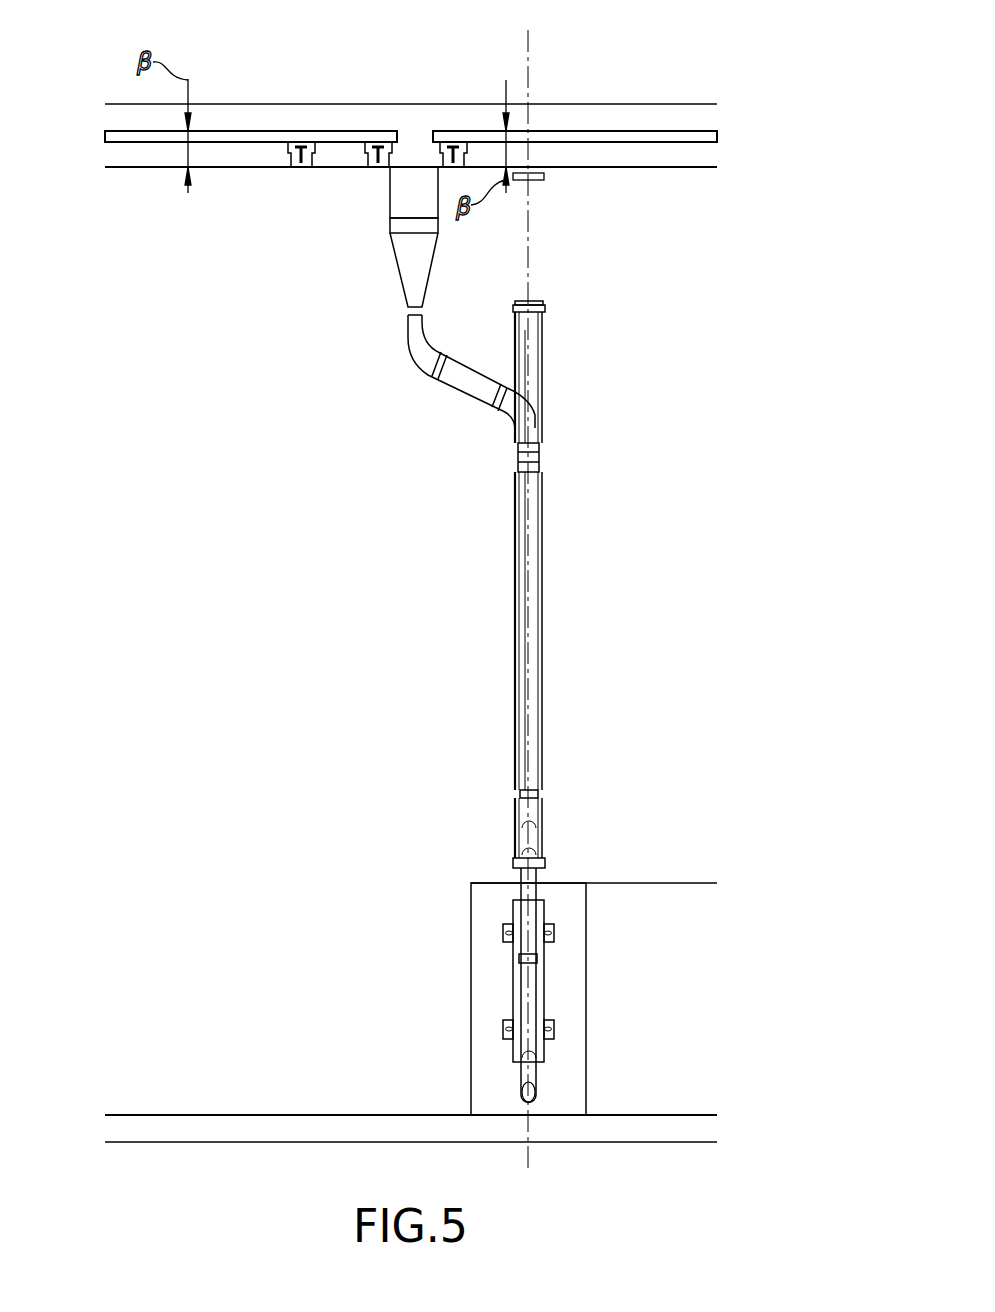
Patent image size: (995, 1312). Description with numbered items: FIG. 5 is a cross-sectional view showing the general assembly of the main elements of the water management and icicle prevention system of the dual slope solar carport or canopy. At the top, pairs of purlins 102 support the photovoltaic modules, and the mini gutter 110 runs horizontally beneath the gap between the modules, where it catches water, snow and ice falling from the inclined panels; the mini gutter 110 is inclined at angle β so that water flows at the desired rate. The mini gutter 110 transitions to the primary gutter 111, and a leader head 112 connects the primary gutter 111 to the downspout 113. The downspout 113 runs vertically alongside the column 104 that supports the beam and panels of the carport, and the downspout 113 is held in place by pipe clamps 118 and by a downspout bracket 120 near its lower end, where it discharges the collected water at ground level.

The purlins 102 is at (285, 88).
The mini gutter 110 is at (592, 118).
The primary gutter 111 is at (411, 200).
The leader head 112 is at (384, 258).
The column 104 is at (552, 364).
The downspout 113 is at (500, 521).
The pipe clamp 118 is at (501, 778).
The downspout bracket 120 is at (502, 884).